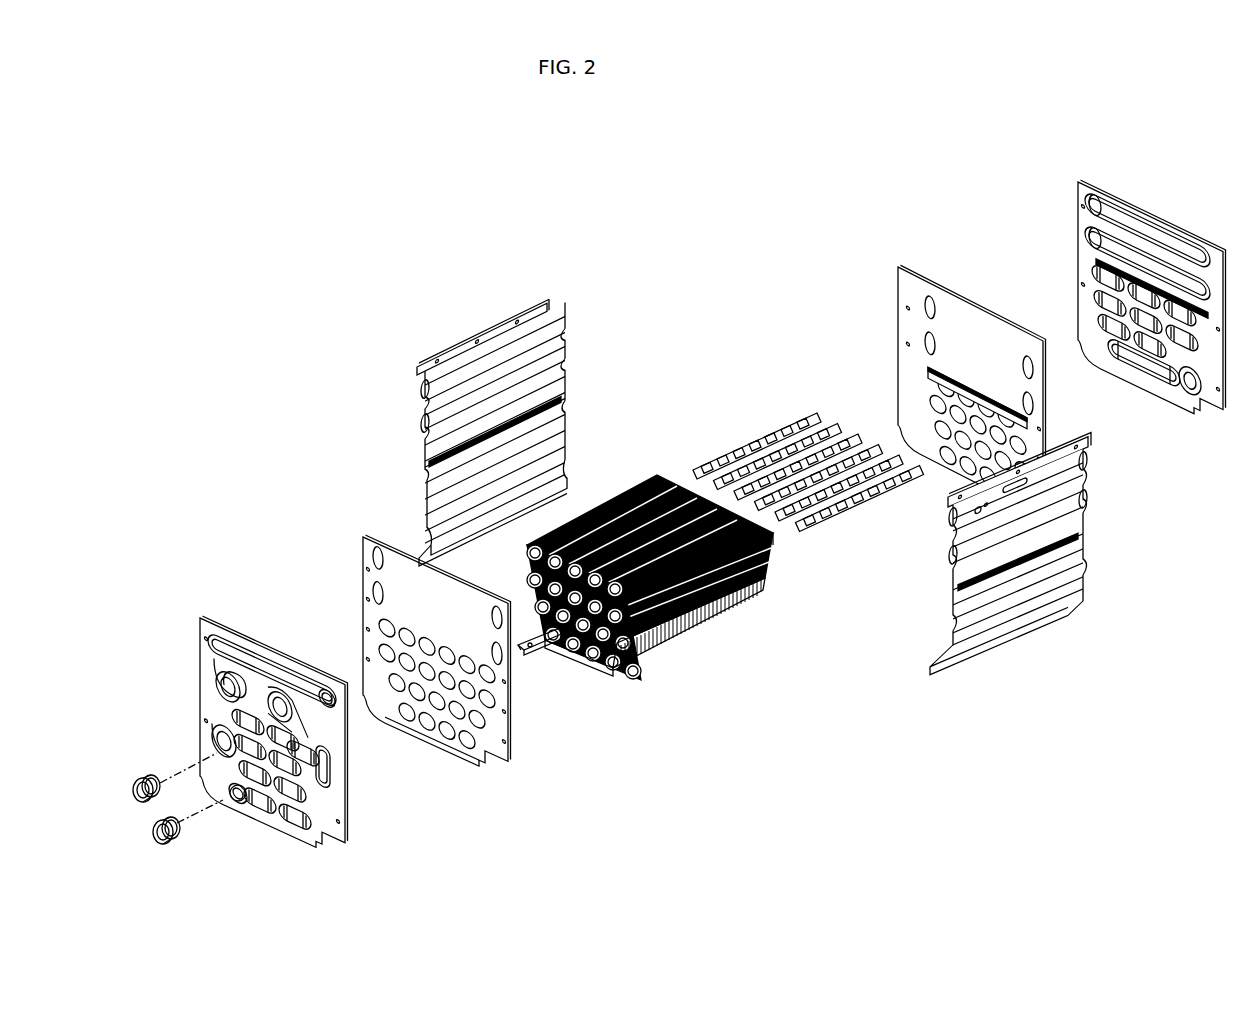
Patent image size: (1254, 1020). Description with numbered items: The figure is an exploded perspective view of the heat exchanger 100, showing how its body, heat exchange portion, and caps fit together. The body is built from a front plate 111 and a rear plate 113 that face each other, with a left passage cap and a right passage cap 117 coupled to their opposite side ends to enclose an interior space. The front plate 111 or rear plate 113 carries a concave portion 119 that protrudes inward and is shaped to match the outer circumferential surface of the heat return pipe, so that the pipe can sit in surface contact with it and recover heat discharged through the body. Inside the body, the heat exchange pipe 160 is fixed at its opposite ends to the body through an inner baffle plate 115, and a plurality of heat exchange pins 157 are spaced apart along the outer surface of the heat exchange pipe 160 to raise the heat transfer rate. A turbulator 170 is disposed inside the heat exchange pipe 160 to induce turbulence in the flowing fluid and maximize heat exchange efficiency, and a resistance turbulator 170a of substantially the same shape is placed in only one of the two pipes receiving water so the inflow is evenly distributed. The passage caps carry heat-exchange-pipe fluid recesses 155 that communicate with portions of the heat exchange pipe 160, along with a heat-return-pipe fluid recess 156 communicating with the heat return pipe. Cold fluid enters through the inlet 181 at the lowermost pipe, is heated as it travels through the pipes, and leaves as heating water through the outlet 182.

The heat exchanger 100 is at (672, 318).
The front plate 111 is at (1040, 540).
The rear plate 113 is at (418, 441).
The inner baffle plate 115 is at (905, 310).
The right passage cap 117 is at (1103, 285).
The concave portion 119 is at (490, 357).
The heat-exchange-pipe fluid recess 155 is at (317, 740).
The heat-return-pipe fluid recess 156 is at (340, 748).
The heat exchange pins 157 is at (680, 642).
The heat exchange pipe 160 is at (626, 684).
The turbulator 170 is at (792, 422).
The resistance turbulator 170a is at (545, 652).
The inlet 181 is at (160, 842).
The outlet 182 is at (138, 802).